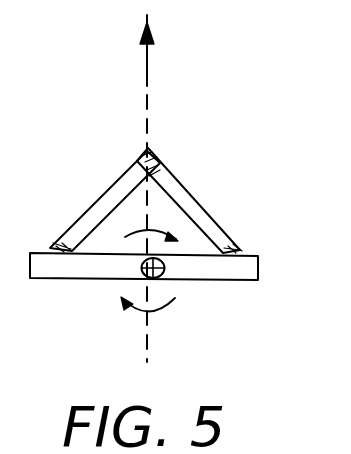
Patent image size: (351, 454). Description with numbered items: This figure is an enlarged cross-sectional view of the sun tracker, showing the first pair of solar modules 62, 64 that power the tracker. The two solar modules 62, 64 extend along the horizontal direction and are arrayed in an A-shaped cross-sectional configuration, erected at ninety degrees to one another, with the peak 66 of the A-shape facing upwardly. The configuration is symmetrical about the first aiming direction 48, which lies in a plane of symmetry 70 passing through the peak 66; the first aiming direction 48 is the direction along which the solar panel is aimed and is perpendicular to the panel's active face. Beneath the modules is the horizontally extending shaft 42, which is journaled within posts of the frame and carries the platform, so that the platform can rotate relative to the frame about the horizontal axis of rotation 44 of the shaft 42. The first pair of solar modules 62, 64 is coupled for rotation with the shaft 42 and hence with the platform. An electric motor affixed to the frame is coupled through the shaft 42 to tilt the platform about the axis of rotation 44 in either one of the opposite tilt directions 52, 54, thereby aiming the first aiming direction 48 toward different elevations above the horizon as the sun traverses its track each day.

The shaft 42 is at (143, 276).
The horizontal axis of rotation 44 is at (166, 277).
The first aiming direction 48 is at (147, 57).
The tilt direction 52 is at (136, 232).
The tilt direction 54 is at (163, 311).
The solar module 62 is at (113, 182).
The solar module 64 is at (208, 208).
The peak 66 is at (153, 147).
The plane of symmetry 70 is at (147, 125).